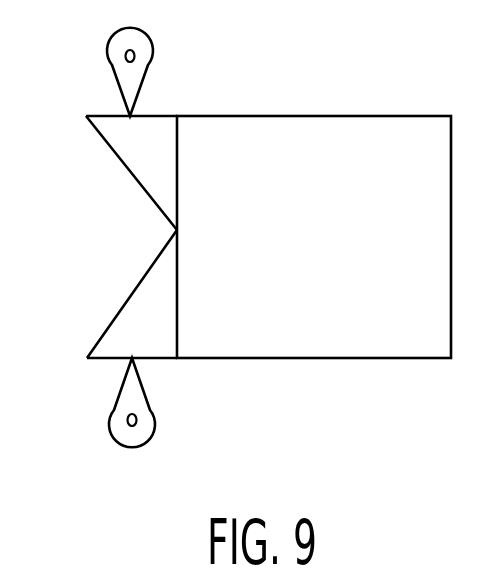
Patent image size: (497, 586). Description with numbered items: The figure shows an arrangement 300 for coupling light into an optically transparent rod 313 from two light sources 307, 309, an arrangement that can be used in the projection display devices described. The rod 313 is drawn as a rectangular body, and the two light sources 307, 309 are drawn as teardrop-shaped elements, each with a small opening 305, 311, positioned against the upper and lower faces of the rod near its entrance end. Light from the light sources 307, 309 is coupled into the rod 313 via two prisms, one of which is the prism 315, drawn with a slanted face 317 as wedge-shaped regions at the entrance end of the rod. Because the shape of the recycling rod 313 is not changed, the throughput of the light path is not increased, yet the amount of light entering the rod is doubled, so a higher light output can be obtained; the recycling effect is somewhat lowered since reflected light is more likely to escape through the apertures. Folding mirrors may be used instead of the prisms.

The arrangement 300 is at (247, 261).
The hole of lower teardrop 305 is at (127, 420).
The light source 307 is at (139, 406).
The light source 309 is at (137, 72).
The hole of upper teardrop 311 is at (125, 55).
The optically transparent rod 313 is at (353, 114).
The prism 315 is at (133, 182).
The lower slanted surface 317 is at (133, 283).